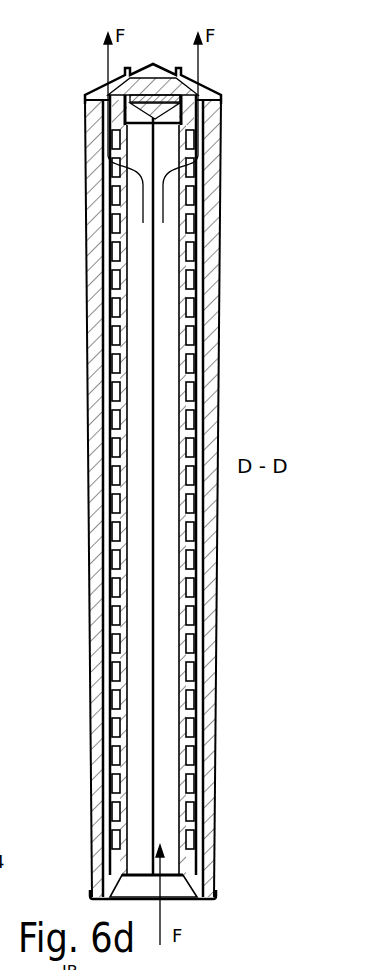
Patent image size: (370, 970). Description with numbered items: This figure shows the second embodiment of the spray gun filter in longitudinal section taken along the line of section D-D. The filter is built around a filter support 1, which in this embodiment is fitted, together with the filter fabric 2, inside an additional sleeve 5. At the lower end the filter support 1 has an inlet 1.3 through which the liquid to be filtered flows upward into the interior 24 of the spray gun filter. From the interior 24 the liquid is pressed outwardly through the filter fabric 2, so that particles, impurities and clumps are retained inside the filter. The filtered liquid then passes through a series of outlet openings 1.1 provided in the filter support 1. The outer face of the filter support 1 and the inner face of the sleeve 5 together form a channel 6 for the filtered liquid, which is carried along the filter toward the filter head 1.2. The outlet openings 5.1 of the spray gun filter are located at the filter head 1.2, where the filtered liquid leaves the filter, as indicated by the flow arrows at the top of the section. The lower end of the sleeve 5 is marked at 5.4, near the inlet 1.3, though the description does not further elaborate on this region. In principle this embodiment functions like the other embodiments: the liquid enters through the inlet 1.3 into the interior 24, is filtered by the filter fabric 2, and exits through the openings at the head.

The filter support 1 is at (190, 263).
The outlet openings 1.1 is at (193, 197).
The filter head 1.2 is at (100, 93).
The inlet 1.3 is at (197, 899).
The filter fabric 2 is at (186, 360).
The sleeve 5 is at (87, 318).
The outlet openings 5.1 is at (100, 97).
The sleeve lower ring 5.4 is at (213, 893).
The channel 6 is at (117, 198).
The interior 24 is at (135, 683).